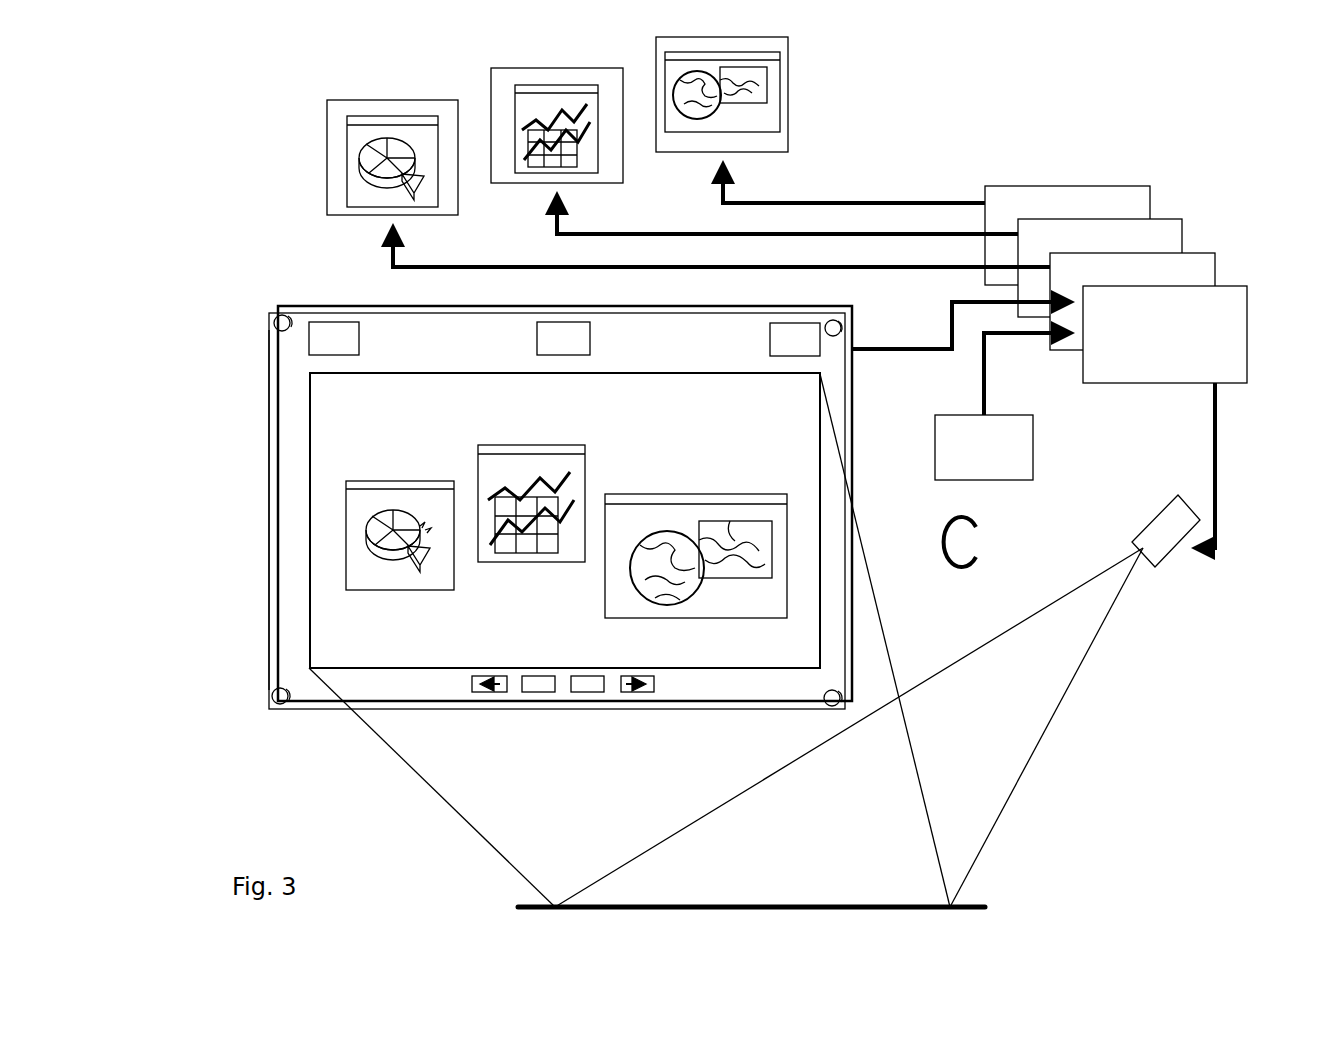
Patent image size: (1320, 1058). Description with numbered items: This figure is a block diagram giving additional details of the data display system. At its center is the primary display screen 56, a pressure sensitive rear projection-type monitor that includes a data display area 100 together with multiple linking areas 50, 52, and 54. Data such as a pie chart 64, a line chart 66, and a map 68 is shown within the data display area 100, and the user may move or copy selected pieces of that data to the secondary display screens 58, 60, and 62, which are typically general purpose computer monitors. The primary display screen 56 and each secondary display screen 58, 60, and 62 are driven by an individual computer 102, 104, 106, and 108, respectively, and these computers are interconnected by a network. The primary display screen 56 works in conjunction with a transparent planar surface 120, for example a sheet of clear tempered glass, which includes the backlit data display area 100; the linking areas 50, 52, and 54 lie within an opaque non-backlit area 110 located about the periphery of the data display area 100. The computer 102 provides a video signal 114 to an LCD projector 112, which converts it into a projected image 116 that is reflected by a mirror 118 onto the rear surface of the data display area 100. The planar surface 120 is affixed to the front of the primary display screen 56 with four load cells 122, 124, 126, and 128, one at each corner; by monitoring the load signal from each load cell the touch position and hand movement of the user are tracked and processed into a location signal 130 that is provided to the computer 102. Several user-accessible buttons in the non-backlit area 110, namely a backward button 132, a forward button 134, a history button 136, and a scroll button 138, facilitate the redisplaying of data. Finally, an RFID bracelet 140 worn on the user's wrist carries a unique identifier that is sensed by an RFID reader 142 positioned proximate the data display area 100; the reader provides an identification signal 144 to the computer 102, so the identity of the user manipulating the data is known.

The linking area 50 is at (359, 330).
The linking area 52 is at (537, 330).
The linking area 54 is at (770, 330).
The primary display screen 56 is at (278, 308).
The secondary display screen 58 is at (327, 110).
The secondary display screen 60 is at (491, 78).
The secondary display screen 62 is at (656, 47).
The pie chart 64 is at (400, 590).
The line chart 66 is at (537, 562).
The map 68 is at (695, 618).
The data display area 100 is at (325, 455).
The computer 102 is at (1247, 302).
The computer 104 is at (1215, 270).
The computer 106 is at (1182, 237).
The computer 108 is at (1150, 203).
The non-backlit area 110 is at (455, 330).
The LCD projector 112 is at (1162, 512).
The video signal 114 is at (1213, 450).
The projected image 116 is at (1045, 610).
The mirror 118 is at (793, 905).
The planar surface 120 is at (268, 655).
The load cell 122 is at (280, 325).
The load cell 124 is at (280, 695).
The load cell 126 is at (840, 698).
The load cell 128 is at (841, 328).
The location signal 130 is at (925, 345).
The backward button 132 is at (478, 677).
The forward button 134 is at (637, 677).
The history button 136 is at (533, 677).
The scroll button 138 is at (577, 677).
The RFID bracelet 140 is at (940, 543).
The RFID reader 142 is at (935, 435).
The identification signal 144 is at (982, 400).